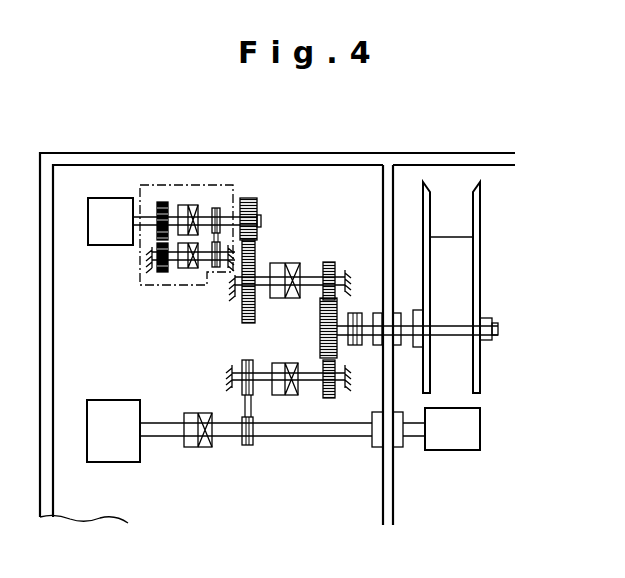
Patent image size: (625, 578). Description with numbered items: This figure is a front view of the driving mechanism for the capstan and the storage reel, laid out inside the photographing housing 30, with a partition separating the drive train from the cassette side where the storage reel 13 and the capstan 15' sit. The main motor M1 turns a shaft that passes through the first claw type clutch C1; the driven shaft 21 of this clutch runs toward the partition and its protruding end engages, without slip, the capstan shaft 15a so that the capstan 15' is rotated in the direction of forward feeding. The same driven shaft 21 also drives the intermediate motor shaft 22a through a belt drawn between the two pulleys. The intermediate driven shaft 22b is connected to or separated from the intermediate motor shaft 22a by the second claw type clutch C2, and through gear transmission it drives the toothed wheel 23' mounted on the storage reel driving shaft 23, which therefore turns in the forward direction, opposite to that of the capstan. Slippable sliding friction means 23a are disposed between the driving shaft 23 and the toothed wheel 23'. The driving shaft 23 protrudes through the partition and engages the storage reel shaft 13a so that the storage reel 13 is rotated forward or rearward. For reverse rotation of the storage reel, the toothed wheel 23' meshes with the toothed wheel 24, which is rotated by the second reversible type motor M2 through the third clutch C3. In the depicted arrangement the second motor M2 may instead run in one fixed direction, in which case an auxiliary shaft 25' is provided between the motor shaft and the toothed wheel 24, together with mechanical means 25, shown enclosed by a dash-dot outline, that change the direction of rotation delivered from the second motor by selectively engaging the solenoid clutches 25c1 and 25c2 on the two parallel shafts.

The photographing housing 30 is at (408, 183).
The storage reel 13 is at (476, 268).
The storage reel shaft 13a is at (403, 338).
The storage reel driving shaft 23 is at (410, 362).
The slippable sliding friction means 23a is at (355, 313).
The toothed wheel 23' is at (301, 328).
The toothed wheel 24 is at (328, 262).
The mechanical means 25 is at (175, 192).
The auxiliary shaft 25' is at (128, 254).
The solenoid clutch 25c1 is at (184, 205).
The solenoid clutch 25c2 is at (186, 268).
The intermediate motor shaft 22a is at (233, 365).
The intermediate driven shaft 22b is at (310, 381).
The driven shaft 21 is at (232, 437).
The capstan shaft 15a is at (413, 437).
The capstan 15' is at (464, 457).
The first claw type clutch C1 is at (194, 447).
The second claw type clutch C2 is at (283, 395).
The third clutch C3 is at (287, 263).
The main motor M1 is at (113, 431).
The second reversible type motor M2 is at (110, 221).